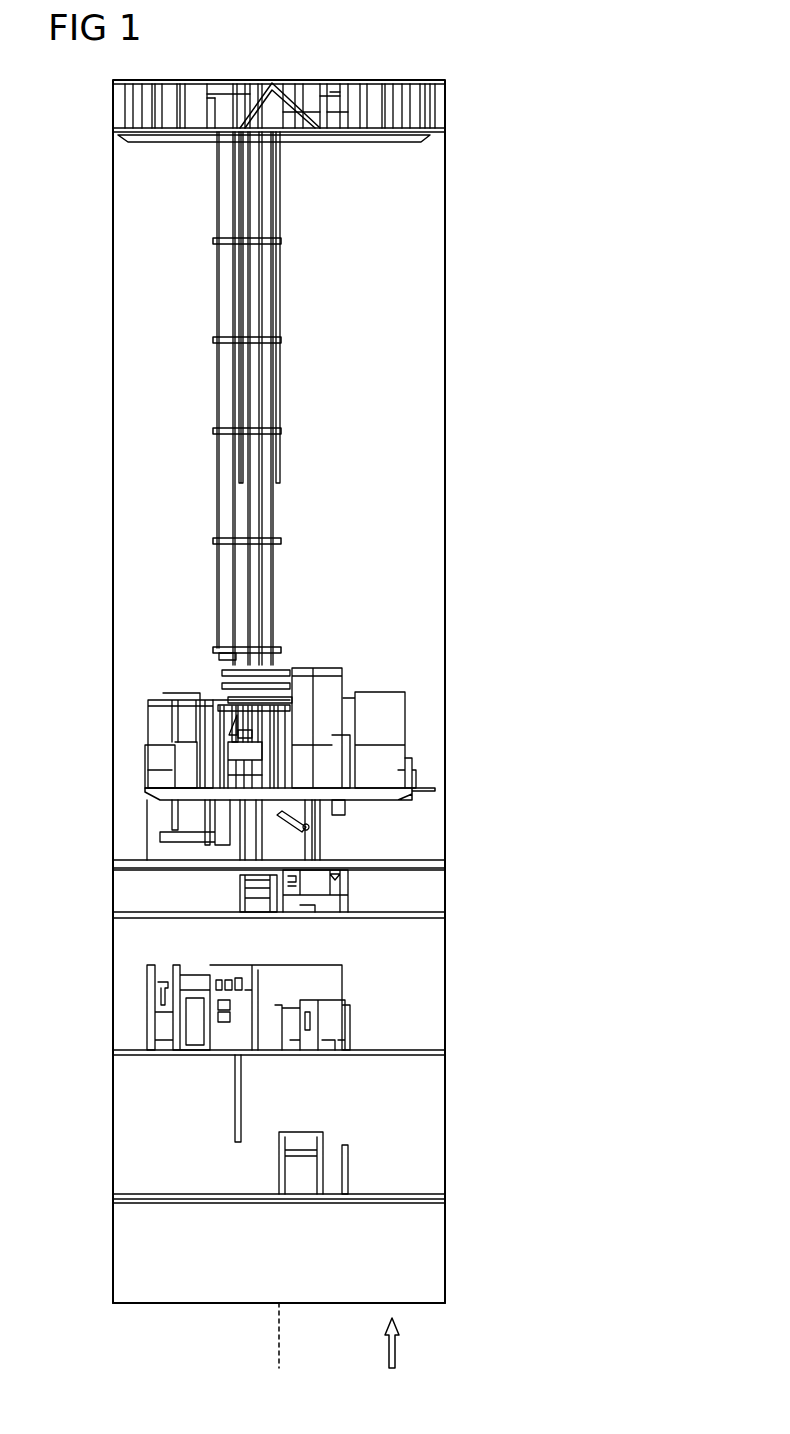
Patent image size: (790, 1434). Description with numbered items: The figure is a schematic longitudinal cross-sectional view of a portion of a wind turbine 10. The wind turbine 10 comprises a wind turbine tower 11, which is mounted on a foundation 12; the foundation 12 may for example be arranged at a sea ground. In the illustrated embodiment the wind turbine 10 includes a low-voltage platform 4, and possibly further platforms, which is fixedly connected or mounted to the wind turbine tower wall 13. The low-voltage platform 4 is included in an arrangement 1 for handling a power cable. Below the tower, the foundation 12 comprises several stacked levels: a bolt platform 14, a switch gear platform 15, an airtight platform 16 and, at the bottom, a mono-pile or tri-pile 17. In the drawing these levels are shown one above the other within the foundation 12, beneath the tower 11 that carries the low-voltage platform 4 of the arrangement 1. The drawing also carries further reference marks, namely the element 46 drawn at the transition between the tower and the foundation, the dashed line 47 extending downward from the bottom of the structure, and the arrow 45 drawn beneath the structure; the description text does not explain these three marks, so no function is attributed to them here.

The wind turbine 10 is at (562, 88).
The wind turbine tower 11 is at (512, 80).
The foundation 12 is at (93, 868).
The wind turbine tower wall 13 is at (446, 490).
The arrangement for handling a power cable 1 is at (418, 680).
The low-voltage platform 4 is at (428, 796).
The intermediate floor 46 is at (113, 860).
The bolt platform 14 is at (425, 912).
The switch gear platform 15 is at (425, 1050).
The airtight platform 16 is at (428, 1194).
The mono-pile or tri-pile 17 is at (428, 1303).
The central axis 47 is at (278, 1333).
The direction arrow 45 is at (397, 1352).